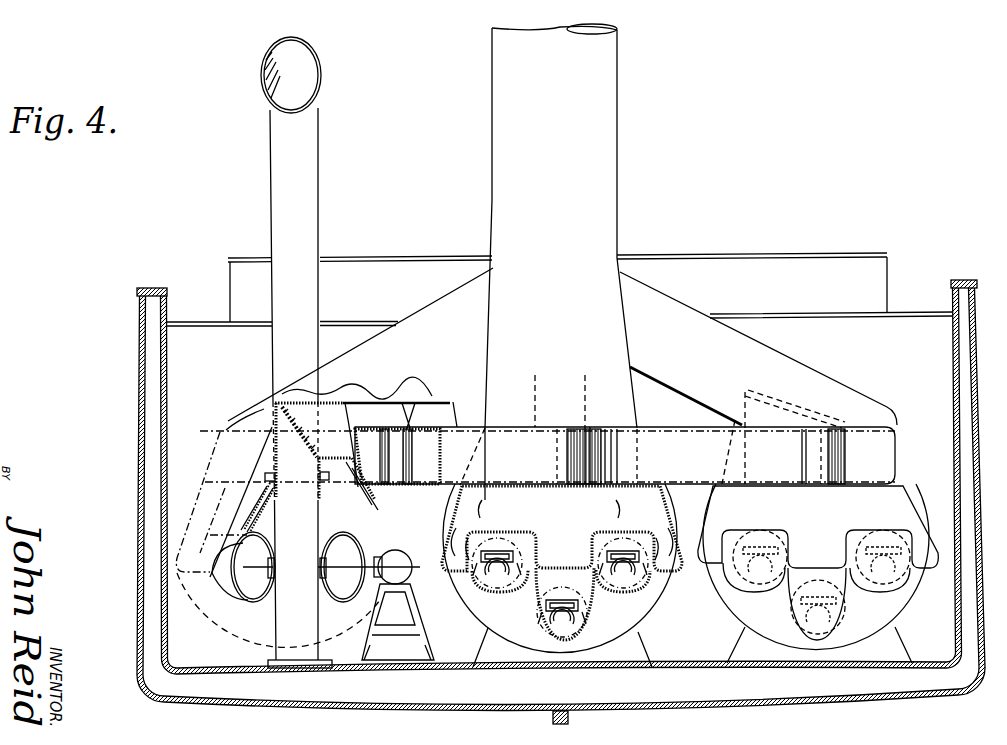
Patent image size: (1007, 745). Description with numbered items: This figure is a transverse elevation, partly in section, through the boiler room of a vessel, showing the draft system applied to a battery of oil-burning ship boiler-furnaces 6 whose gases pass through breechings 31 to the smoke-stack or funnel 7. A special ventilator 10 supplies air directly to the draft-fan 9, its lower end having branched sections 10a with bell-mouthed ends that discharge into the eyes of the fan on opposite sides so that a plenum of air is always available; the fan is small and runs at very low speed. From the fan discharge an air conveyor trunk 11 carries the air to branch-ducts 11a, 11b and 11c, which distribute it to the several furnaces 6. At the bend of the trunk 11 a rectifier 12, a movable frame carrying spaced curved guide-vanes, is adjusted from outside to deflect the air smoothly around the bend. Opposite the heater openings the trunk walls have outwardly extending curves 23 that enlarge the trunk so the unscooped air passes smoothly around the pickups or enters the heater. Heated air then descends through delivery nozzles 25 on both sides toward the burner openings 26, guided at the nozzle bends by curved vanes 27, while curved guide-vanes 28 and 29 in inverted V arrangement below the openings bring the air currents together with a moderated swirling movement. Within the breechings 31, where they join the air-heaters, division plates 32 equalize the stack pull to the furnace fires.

The ship boiler-furnaces 6 is at (245, 626).
The smoke-stack or funnel 7 is at (618, 178).
The draft-fan 9 is at (323, 596).
The special ventilator 10 is at (319, 208).
The branched sections 10a is at (255, 502).
The air conveyor trunk 11 is at (440, 414).
The branch-duct 11a is at (358, 410).
The branch-duct 11b is at (673, 427).
The branch-duct 11c is at (430, 462).
The rectifier 12 is at (273, 441).
The outwardly extending curves of trunk wall 23 is at (587, 484).
The delivery nozzles 25 is at (475, 503).
The burner openings 26 is at (600, 560).
The curved vanes 27 is at (470, 560).
The curved guide-vane 28 is at (499, 582).
The curved guide-vane 29 is at (514, 588).
The breechings 31 is at (439, 302).
The division plates 32 is at (585, 393).